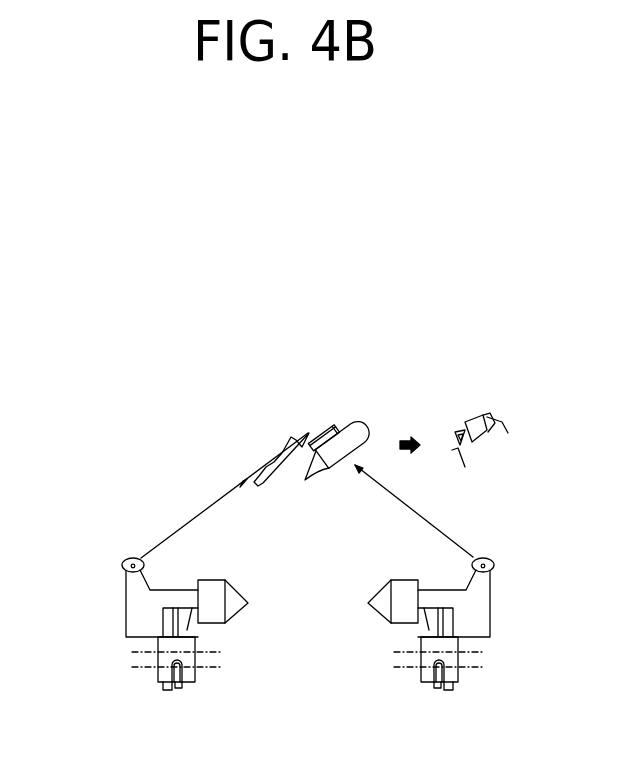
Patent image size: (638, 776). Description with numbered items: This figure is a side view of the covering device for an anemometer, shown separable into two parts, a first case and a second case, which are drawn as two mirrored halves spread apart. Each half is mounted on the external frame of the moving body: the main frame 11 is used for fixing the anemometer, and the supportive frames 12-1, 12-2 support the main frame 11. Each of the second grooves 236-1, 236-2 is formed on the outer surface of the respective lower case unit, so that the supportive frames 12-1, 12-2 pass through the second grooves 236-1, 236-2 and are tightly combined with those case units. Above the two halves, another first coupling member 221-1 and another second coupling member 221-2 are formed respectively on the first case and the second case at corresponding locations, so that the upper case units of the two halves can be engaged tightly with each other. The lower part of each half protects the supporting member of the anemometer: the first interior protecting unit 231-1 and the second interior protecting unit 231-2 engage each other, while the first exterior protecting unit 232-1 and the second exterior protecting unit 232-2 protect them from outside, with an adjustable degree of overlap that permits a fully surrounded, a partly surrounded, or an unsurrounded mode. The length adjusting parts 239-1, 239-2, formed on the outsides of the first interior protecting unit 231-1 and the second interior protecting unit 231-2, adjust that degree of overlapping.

The main frame 11 is at (207, 662).
The supportive frame 12-1 is at (178, 684).
The supportive frame 12-2 is at (435, 684).
The first coupling member 221-1 is at (292, 440).
The second coupling member 221-2 is at (335, 425).
The first interior protecting unit 231-1 is at (188, 626).
The second interior protecting unit 231-2 is at (428, 626).
The first exterior protecting unit 232-1 is at (168, 643).
The second exterior protecting unit 232-2 is at (448, 643).
The second groove 236-1 is at (168, 670).
The second groove 236-2 is at (448, 670).
The length adjusting part 239-1 is at (175, 623).
The length adjusting part 239-2 is at (441, 623).